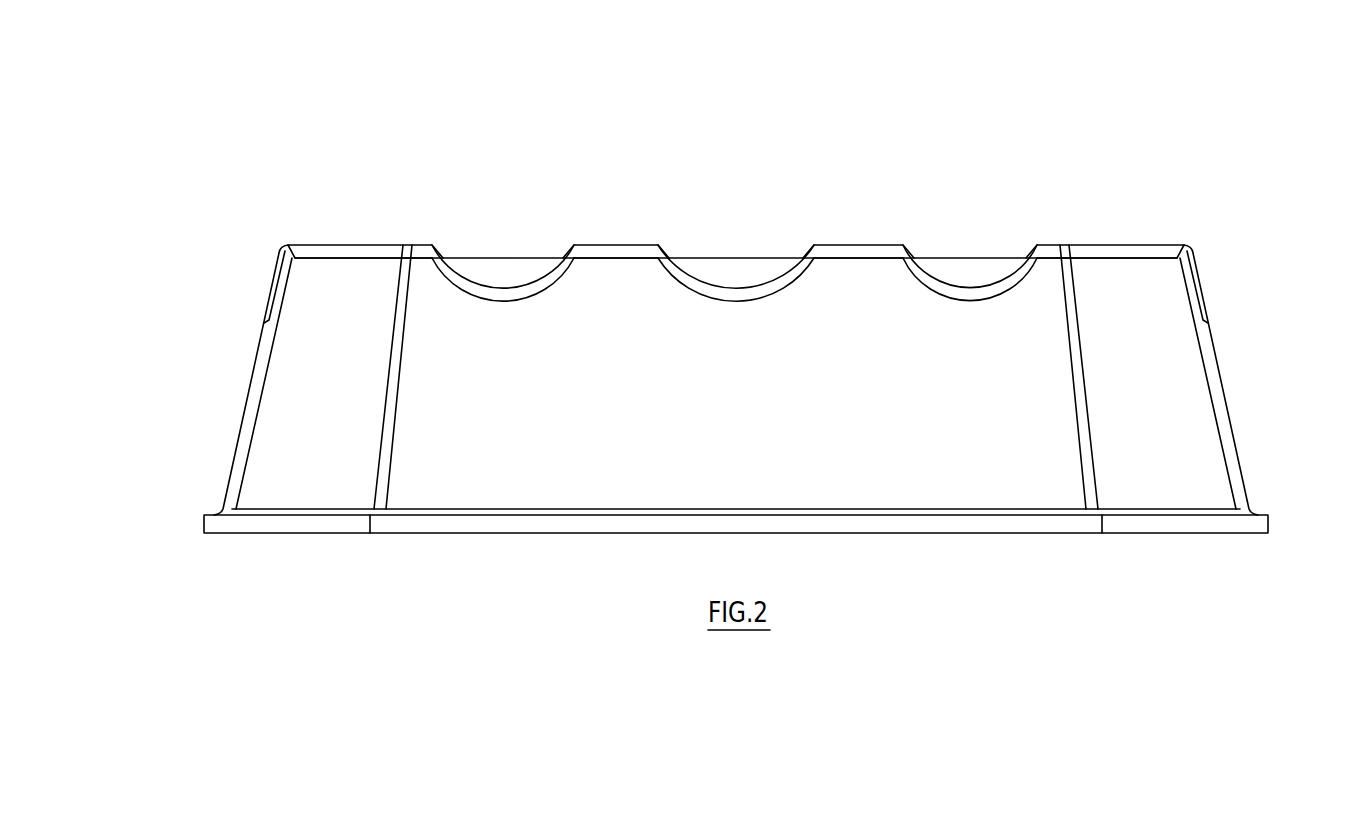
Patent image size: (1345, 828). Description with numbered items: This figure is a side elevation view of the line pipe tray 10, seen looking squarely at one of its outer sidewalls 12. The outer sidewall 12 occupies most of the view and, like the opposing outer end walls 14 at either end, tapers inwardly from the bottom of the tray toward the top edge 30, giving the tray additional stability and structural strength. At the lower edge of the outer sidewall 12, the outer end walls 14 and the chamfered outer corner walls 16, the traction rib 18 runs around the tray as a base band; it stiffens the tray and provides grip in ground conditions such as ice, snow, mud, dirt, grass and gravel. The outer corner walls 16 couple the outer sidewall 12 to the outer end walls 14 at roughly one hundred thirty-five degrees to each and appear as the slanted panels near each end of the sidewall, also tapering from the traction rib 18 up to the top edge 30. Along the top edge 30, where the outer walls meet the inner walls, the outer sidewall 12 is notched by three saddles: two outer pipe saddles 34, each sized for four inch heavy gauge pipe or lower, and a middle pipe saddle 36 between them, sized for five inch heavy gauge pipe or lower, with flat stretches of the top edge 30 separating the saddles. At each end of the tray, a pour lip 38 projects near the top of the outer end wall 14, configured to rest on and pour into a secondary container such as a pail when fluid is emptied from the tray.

The line pipe tray 10 is at (491, 33).
The outer sidewall 12 is at (917, 475).
The outer end wall 14 is at (240, 422).
The outer corner wall 16 is at (320, 477).
The traction rib 18 is at (540, 529).
The top edge 30 is at (363, 238).
The outer pipe saddle 34 is at (500, 253).
The middle pipe saddle 36 is at (738, 255).
The pour lip 38 is at (268, 316).